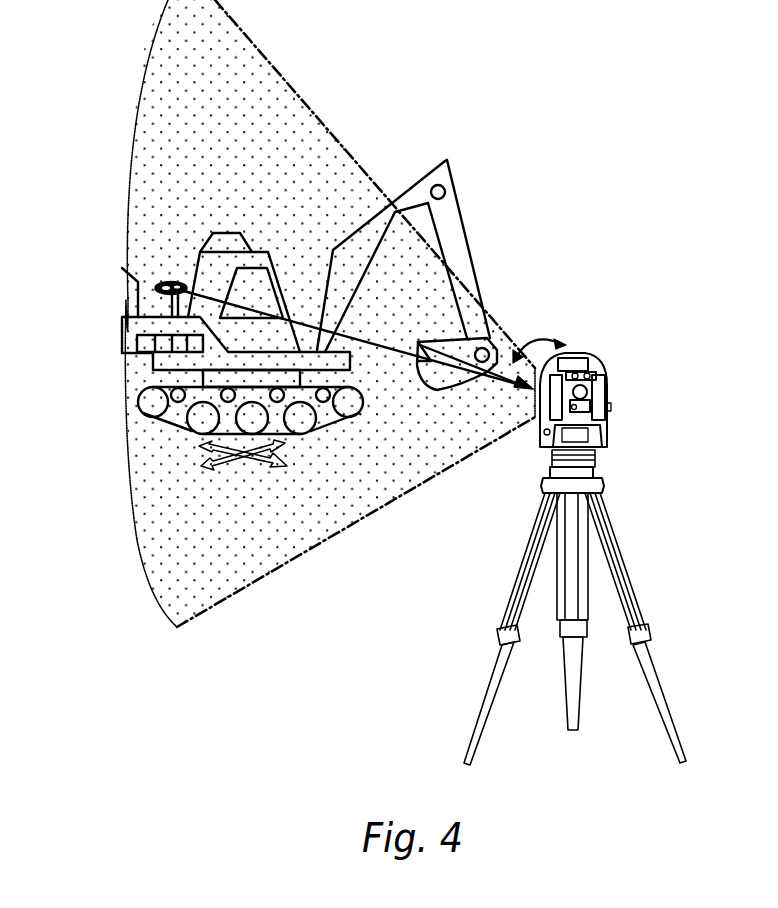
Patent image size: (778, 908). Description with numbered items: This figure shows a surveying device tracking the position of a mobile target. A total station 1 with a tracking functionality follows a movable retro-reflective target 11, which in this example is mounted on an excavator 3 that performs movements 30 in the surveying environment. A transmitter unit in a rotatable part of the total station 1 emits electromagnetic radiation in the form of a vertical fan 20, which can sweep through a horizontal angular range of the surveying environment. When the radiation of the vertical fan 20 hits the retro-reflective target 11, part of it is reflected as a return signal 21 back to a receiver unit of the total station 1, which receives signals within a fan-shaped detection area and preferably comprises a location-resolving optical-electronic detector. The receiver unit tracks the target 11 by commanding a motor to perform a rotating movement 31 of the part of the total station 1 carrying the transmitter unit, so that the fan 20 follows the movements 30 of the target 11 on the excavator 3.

The total station 1 is at (612, 377).
The excavator 3 is at (149, 254).
The retro-reflective target 11 is at (162, 289).
The vertical fan 20 is at (162, 98).
The return signal 21 is at (404, 349).
The movements 30 is at (200, 455).
The rotating movement 31 is at (566, 342).